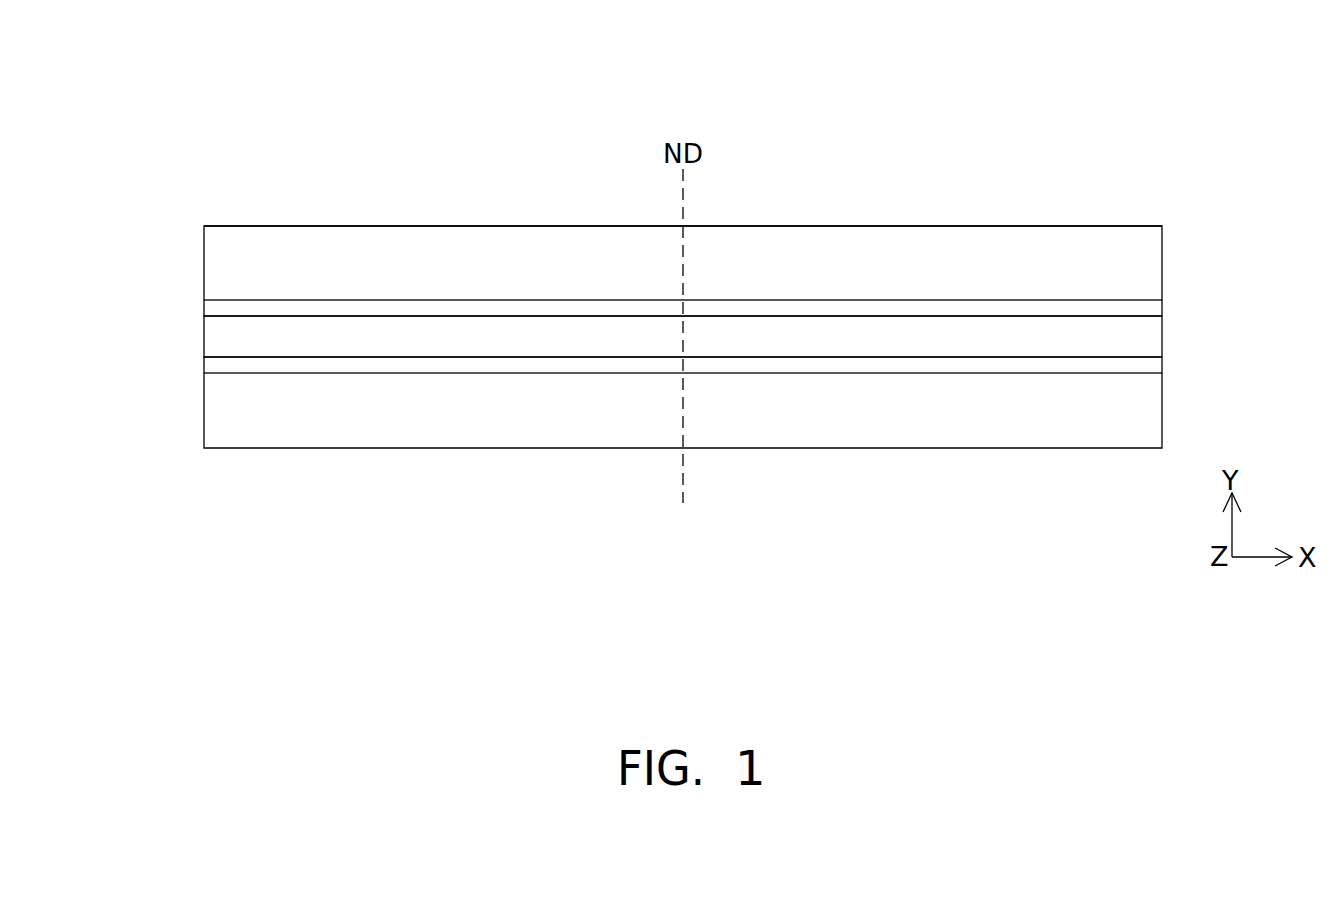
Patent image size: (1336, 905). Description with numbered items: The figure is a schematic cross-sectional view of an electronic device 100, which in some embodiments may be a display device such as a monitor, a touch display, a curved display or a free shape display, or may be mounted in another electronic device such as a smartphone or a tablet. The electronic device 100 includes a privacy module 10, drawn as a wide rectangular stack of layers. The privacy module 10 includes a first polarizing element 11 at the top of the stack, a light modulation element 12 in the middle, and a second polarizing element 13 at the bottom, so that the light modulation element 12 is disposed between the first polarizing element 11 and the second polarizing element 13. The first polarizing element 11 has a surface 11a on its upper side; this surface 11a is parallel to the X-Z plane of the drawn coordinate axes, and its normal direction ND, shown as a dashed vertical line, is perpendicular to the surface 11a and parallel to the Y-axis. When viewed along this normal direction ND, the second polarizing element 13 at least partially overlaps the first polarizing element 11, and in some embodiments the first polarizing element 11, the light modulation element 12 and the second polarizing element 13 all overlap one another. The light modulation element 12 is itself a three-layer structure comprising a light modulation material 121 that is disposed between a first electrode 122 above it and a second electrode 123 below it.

The electronic device 100 is at (202, 134).
The privacy module 10 is at (1107, 87).
The first polarizing element 11 is at (225, 262).
The surface 11a is at (937, 226).
The light modulation element 12 is at (135, 290).
The light modulation material 121 is at (225, 338).
The first electrode 122 is at (225, 308).
The second electrode 123 is at (225, 366).
The second polarizing element 13 is at (225, 411).